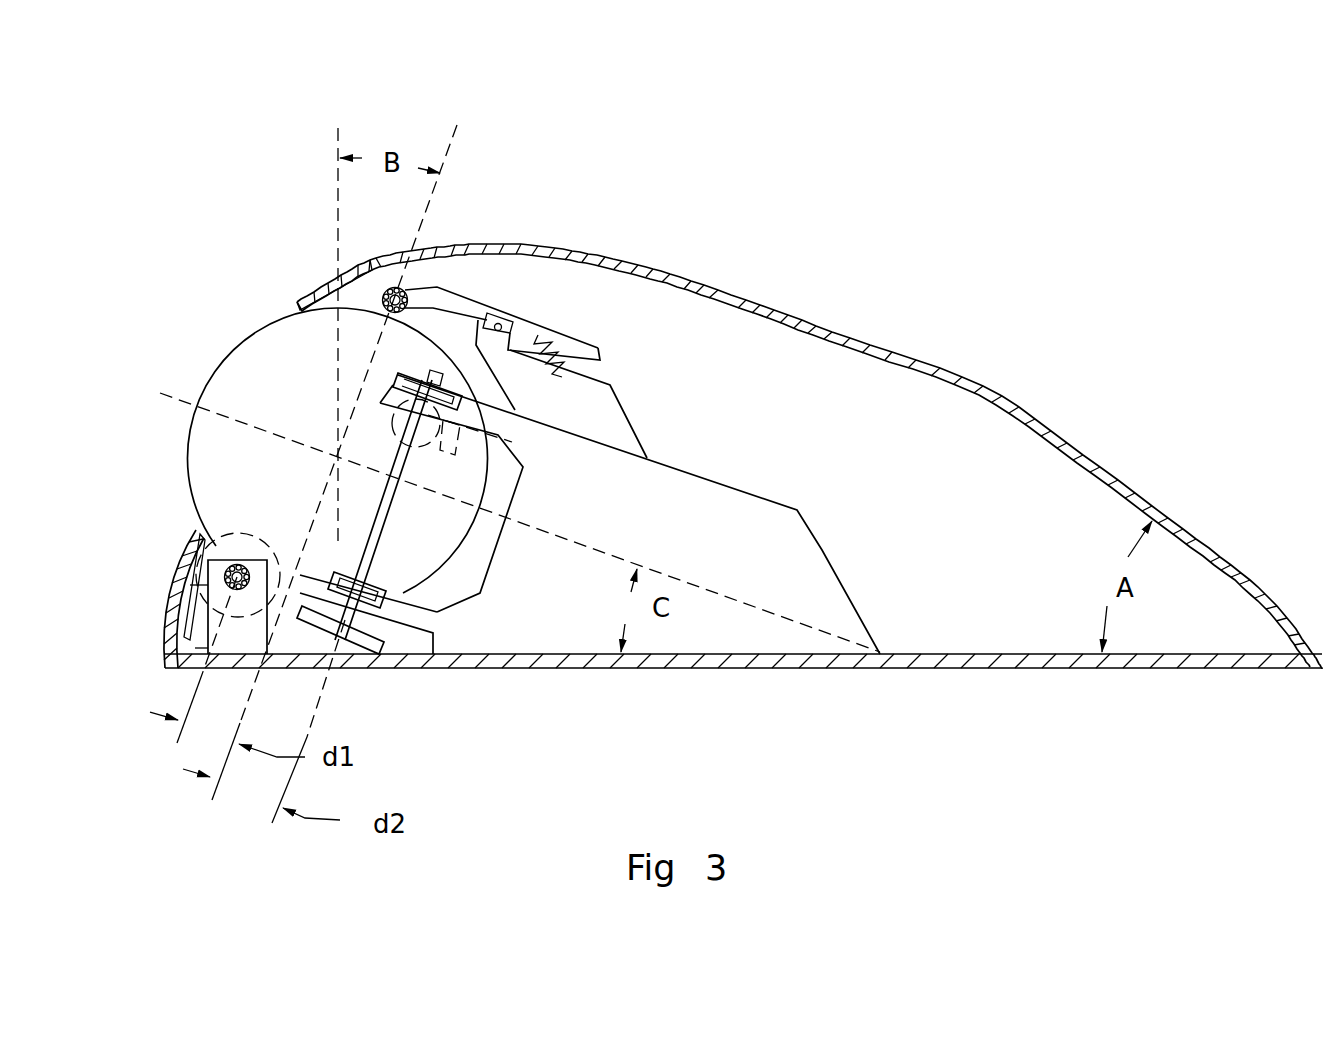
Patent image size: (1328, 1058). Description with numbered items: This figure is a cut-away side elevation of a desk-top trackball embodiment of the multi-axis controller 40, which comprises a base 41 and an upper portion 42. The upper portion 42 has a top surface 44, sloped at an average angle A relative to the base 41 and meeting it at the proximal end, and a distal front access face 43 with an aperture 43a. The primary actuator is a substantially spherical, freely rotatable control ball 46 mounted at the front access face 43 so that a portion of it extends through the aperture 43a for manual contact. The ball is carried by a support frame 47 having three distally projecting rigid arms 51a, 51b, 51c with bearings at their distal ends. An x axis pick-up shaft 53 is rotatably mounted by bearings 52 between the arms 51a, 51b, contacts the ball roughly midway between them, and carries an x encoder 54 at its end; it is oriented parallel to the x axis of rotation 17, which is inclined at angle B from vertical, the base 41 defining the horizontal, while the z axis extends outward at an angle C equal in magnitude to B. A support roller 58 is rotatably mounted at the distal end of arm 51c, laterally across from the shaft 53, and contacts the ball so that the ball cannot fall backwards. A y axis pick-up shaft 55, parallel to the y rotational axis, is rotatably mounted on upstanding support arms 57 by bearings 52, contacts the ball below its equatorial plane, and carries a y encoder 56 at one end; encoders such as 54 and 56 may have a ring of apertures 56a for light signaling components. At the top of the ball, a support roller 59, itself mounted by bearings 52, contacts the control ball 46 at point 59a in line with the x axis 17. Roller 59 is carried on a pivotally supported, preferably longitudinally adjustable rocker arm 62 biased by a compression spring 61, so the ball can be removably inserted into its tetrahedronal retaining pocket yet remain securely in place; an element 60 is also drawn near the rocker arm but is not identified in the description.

The x axis of rotation 17 is at (459, 146).
The multi-axis controller 40 is at (809, 382).
The base 41 is at (997, 653).
The upper portion 42 is at (1000, 387).
The front access face 43 is at (174, 573).
The aperture 43a is at (291, 298).
The top surface 44 is at (1116, 464).
The control ball 46 is at (212, 369).
The support frame 47 is at (753, 477).
The arm 51a is at (424, 619).
The arm 51b is at (509, 419).
The arm 51c is at (476, 468).
The bearings 52 is at (398, 313).
The x axis pick-up shaft 53 is at (383, 510).
The x encoder 54 is at (358, 645).
The y axis pick-up shaft 55 is at (240, 569).
The y encoder 56 is at (204, 622).
The apertures 56a is at (202, 592).
The upstanding support arms 57 is at (211, 645).
The support roller 58 is at (396, 412).
The support roller 59 is at (407, 293).
The contact point 59a is at (393, 311).
The slider block 60 is at (512, 318).
The compression spring 61 is at (567, 362).
The rocker arm 62 is at (605, 346).